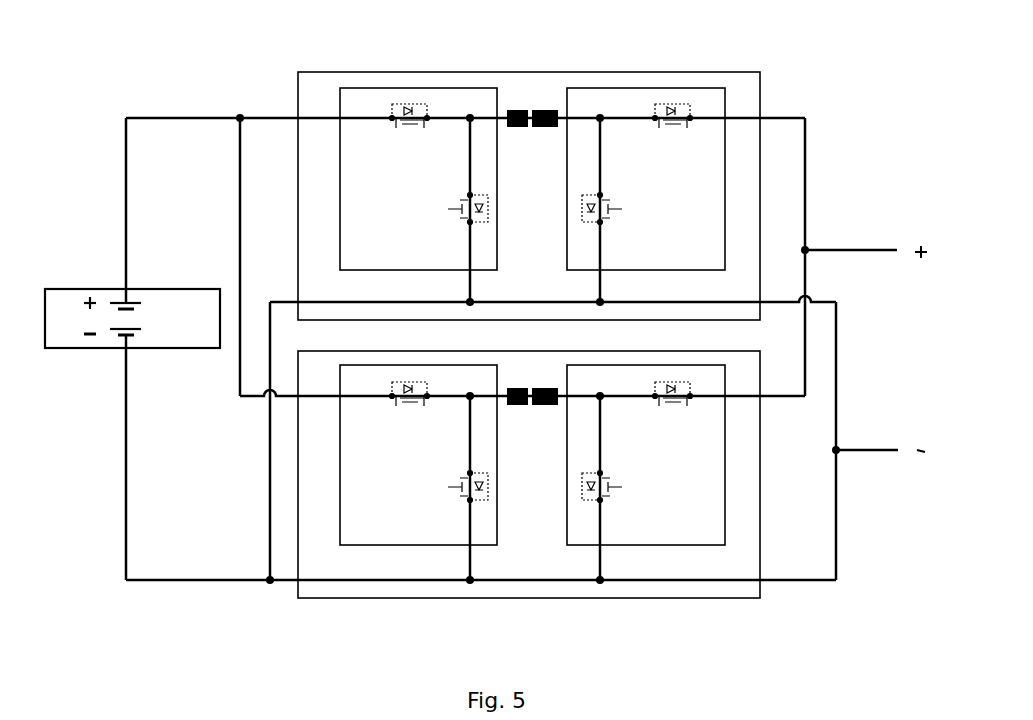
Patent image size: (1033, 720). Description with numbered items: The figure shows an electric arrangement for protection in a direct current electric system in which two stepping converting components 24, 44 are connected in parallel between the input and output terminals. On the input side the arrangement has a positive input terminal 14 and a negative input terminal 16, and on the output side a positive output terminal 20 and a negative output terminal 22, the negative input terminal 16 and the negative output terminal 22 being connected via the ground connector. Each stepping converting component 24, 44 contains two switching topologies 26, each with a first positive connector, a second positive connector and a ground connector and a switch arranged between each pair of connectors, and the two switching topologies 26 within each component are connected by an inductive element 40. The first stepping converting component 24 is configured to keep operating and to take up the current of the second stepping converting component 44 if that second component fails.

The positive input terminal 14 is at (126, 218).
The negative input terminal 16 is at (126, 509).
The positive output terminal 20 is at (866, 250).
The negative output terminal 22 is at (878, 452).
The first stepping converting component 24 is at (290, 78).
The switching topology 26 is at (402, 88).
The inductive element 40 is at (535, 110).
The second stepping converting component 44 is at (290, 596).